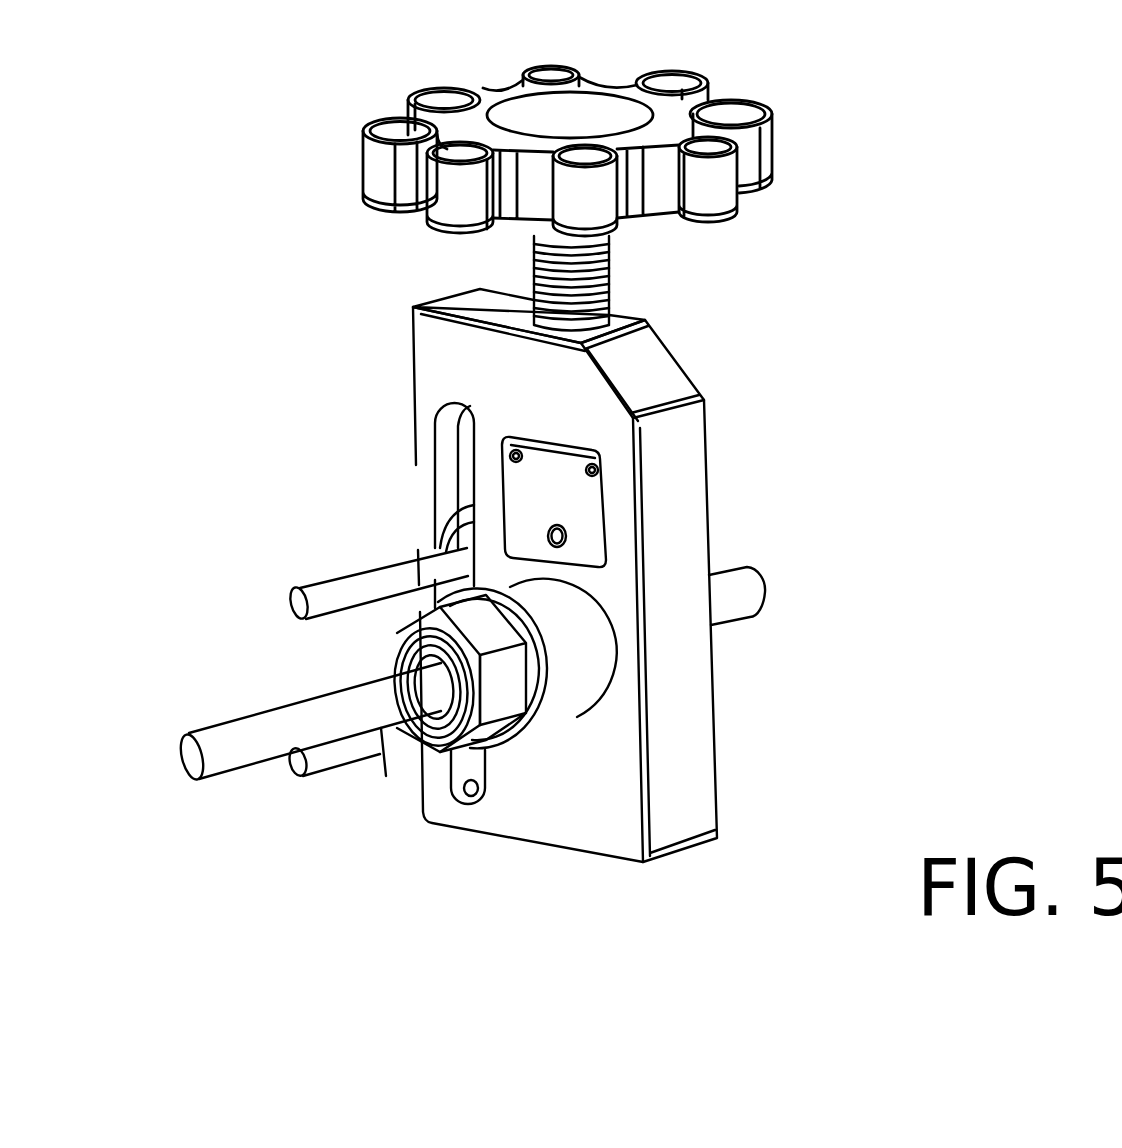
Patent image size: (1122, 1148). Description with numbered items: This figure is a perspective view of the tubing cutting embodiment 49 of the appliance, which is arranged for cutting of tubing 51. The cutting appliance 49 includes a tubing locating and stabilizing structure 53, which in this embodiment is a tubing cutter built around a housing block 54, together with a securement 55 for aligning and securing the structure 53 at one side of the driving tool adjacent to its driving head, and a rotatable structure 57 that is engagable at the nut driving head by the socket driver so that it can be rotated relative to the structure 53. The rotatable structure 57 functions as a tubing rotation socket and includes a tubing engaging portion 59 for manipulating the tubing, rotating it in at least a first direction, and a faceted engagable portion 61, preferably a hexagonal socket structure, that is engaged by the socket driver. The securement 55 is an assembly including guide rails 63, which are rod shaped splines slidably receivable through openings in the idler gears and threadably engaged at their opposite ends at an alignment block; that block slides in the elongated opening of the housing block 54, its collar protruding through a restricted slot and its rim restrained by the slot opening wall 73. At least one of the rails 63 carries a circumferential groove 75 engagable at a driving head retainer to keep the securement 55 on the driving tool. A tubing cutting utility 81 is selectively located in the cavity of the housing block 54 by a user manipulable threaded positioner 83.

The tubing cutting embodiment 49 is at (760, 403).
The user manipulable threaded positioner 83 is at (758, 142).
The housing block 54 is at (478, 294).
The tubing locating and stabilizing structure 53 is at (700, 734).
The tubing cutting utility 81 is at (588, 510).
The tubing engaging portion 59 is at (577, 717).
The rotatable structure 57 is at (550, 717).
The faceted engagable portion 61 is at (500, 690).
The circumferential groove 75 is at (385, 730).
The slot opening wall 73 is at (480, 757).
The guide rails 63 is at (297, 607).
The securement 55 is at (435, 555).
The tubing 51 is at (762, 582).